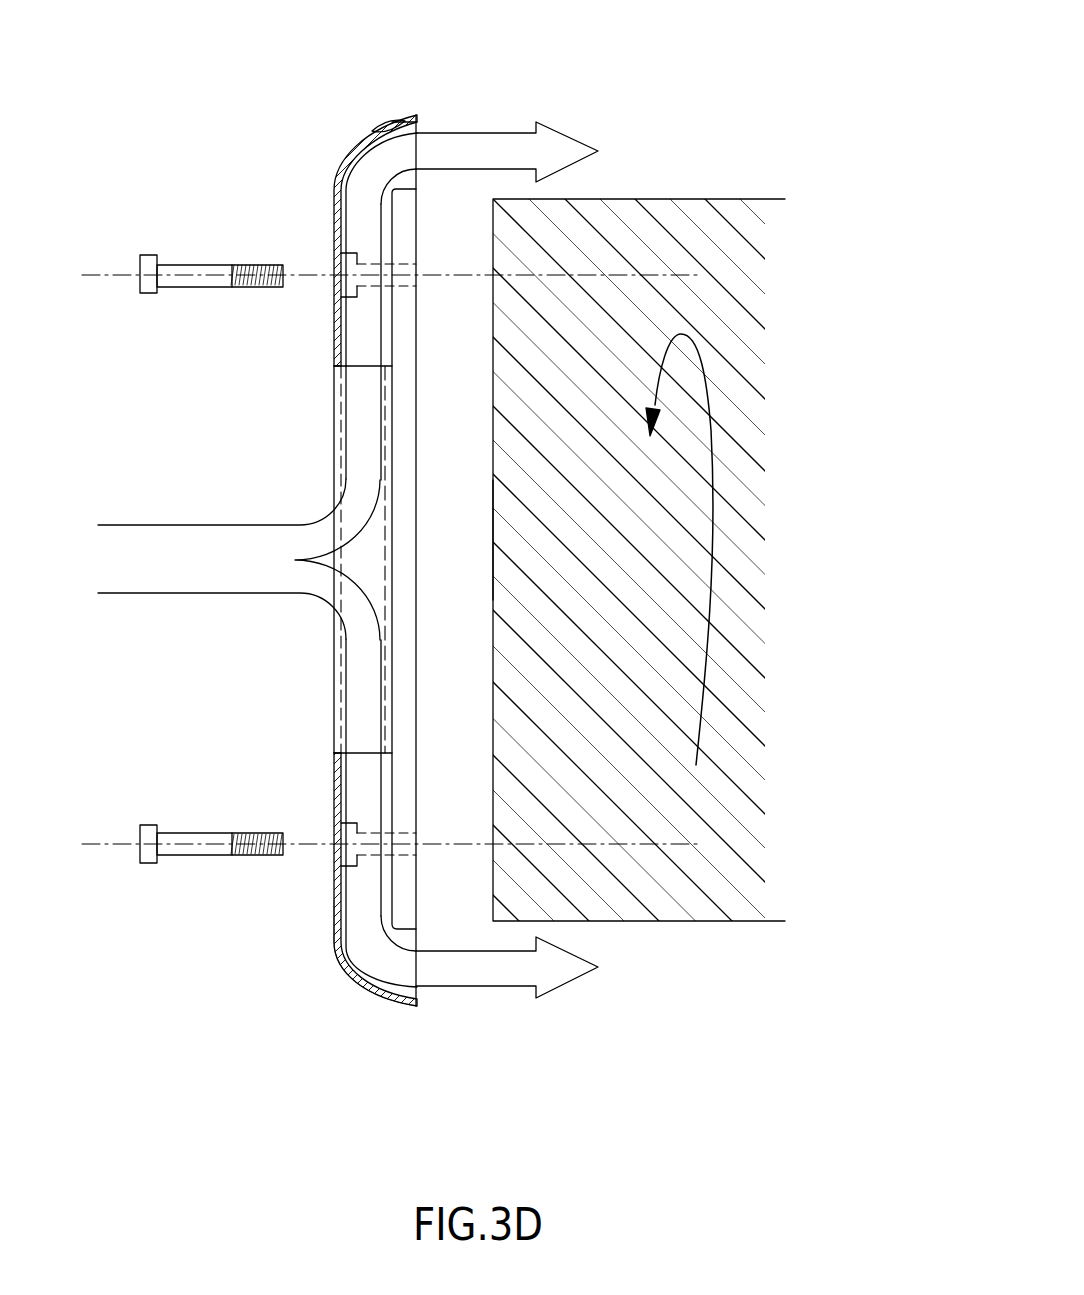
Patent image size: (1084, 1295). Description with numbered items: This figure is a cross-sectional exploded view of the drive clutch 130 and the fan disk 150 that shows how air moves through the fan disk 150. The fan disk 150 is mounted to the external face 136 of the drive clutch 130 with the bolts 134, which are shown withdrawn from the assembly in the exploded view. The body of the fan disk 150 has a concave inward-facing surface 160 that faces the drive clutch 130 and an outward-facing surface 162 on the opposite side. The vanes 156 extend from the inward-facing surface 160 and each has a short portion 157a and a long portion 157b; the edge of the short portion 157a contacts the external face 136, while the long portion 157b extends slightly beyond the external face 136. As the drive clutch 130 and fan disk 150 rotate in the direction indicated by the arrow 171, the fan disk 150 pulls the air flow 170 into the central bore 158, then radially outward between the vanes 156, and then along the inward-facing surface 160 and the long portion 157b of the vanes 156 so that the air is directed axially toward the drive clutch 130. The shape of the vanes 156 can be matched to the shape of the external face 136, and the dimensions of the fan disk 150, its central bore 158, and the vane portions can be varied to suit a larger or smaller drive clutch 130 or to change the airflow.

The drive clutch 130 is at (650, 222).
The bolts 134 is at (210, 265).
The external face 136 is at (492, 537).
The fan disk 150 is at (357, 100).
The vanes 156 is at (363, 930).
The short portion 157a is at (388, 325).
The long portion 157b is at (420, 126).
The central bore 158 is at (328, 686).
The inward-facing surface 160 is at (400, 127).
The outward-facing surface 162 is at (340, 945).
The air flow 170 is at (215, 540).
The arrow 171 is at (718, 507).